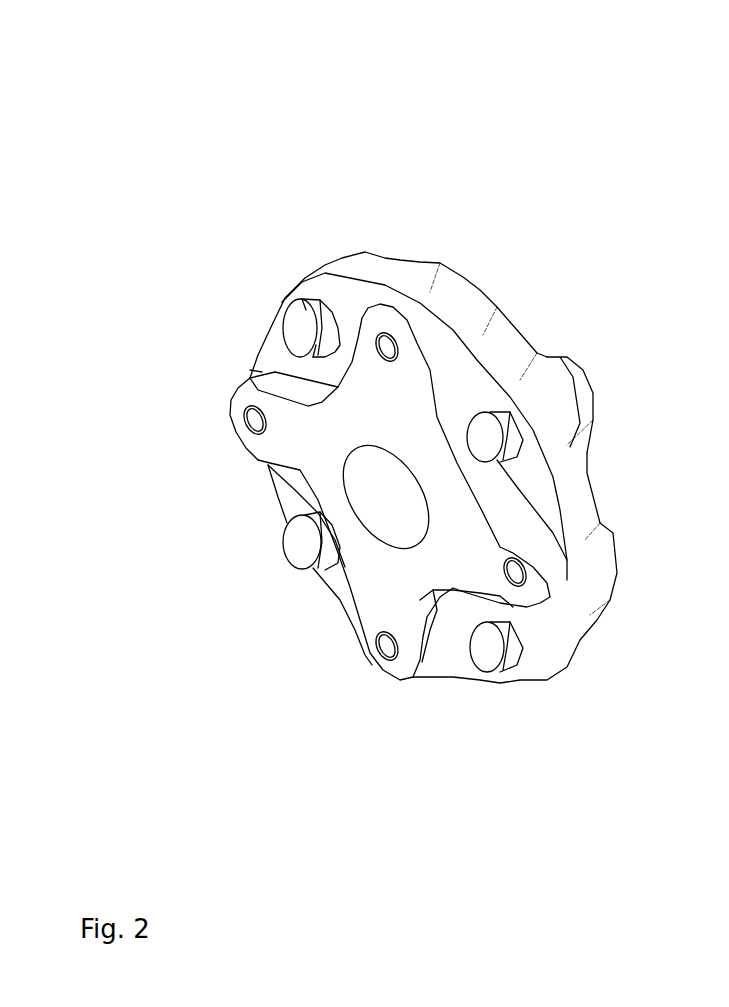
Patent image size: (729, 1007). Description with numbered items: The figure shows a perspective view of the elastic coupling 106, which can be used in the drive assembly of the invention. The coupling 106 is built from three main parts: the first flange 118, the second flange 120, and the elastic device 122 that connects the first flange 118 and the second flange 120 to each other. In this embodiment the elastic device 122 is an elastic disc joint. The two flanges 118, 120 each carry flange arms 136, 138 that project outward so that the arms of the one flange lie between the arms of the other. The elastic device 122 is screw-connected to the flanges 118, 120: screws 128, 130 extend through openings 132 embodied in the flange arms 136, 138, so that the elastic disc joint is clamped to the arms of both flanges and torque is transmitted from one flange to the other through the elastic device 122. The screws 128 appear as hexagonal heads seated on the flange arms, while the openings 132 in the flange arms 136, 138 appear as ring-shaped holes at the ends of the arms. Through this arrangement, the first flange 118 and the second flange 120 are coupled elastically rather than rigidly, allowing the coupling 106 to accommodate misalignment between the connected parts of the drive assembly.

The elastic coupling 106 is at (400, 172).
The first flange 118 is at (333, 590).
The second flange 120 is at (563, 347).
The elastic device 122 is at (322, 262).
The screws 128 is at (297, 313).
The screws 130 is at (387, 650).
The openings 132 is at (373, 643).
The flange arms 136 is at (378, 322).
The flange arms 138 is at (570, 387).